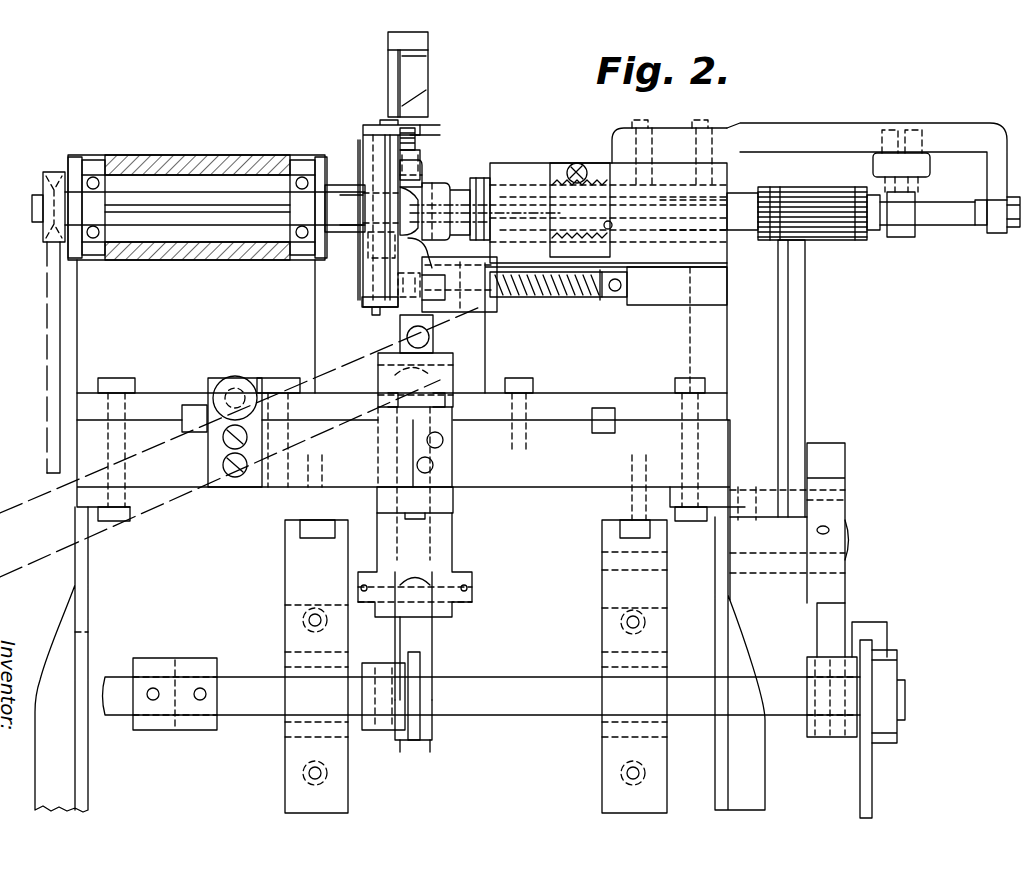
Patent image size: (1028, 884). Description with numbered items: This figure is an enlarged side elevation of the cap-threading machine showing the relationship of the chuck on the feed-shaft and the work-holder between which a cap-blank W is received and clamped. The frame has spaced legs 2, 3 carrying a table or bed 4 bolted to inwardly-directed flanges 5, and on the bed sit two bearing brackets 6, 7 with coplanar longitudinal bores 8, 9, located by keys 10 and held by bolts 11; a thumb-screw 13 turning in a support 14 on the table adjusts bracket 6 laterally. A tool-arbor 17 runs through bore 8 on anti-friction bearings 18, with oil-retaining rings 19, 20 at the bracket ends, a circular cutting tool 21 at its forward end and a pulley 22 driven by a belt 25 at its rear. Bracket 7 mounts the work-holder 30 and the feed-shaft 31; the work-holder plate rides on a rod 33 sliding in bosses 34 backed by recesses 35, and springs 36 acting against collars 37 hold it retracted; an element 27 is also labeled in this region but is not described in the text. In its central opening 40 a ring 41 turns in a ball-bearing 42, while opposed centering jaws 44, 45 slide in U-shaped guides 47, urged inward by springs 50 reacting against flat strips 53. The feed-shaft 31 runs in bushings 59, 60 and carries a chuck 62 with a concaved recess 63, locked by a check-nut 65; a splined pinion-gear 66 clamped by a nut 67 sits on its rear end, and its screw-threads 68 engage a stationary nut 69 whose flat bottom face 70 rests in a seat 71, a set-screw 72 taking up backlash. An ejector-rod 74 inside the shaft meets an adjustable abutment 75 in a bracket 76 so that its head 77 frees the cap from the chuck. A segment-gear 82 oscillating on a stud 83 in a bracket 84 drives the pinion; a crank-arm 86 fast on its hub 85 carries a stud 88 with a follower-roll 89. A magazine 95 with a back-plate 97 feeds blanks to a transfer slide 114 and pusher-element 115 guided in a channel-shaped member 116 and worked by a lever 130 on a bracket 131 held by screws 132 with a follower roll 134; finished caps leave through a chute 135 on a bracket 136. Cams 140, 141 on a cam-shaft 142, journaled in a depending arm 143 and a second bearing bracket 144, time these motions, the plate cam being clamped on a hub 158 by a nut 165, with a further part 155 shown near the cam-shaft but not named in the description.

The leg 2 is at (88, 604).
The leg 3 is at (713, 629).
The table or bed 4 is at (540, 474).
The inwardly-directed flanges 5 is at (140, 500).
The bearing bracket 6 is at (196, 326).
The bearing bracket 7 is at (724, 347).
The longitudinal bore 8 is at (219, 156).
The longitudinal bore 9 is at (670, 180).
The keys 10 is at (182, 430).
The bolts 11 is at (120, 378).
The thumb-screw 13 is at (238, 388).
The support 14 is at (208, 386).
The tool-arbor 17 is at (215, 208).
The anti-friction bearings 18 is at (110, 160).
The oil-retaining ring 19 is at (322, 156).
The oil-retaining ring 20 is at (73, 158).
The circular cutting tool 21 is at (352, 230).
The pulley 22 is at (42, 177).
The belt 25 is at (46, 333).
The collar 27 is at (439, 294).
The work-holder 30 is at (367, 134).
The feed-shaft 31 is at (740, 192).
The rod 33 is at (532, 298).
The bosses 34 is at (457, 314).
The recesses 35 is at (723, 308).
The springs 36 is at (555, 300).
The collars 37 is at (610, 298).
The central opening 40 is at (364, 268).
The ring 41 is at (364, 187).
The ball-bearing 42 is at (365, 152).
The centering jaw 44 is at (442, 180).
The centering jaw 45 is at (438, 276).
The U-shaped guides 47 is at (437, 166).
The springs 50 is at (420, 147).
The flat strips 53 is at (422, 128).
The bushing 59 is at (685, 244).
The bushing 60 is at (526, 177).
The chuck 62 is at (460, 190).
The concaved recess 63 is at (440, 239).
The check-nut 65 is at (492, 168).
The splined pinion-gear 66 is at (815, 186).
The nut 67 is at (874, 232).
The screw-threads 68 is at (629, 238).
The stationary nut 69 is at (552, 248).
The flat bottom face 70 is at (620, 286).
The seat 71 is at (606, 226).
The set-screw 72 is at (577, 163).
The ejector-rod 74 is at (935, 226).
The adjustable abutment 75 is at (980, 227).
The bracket 76 is at (960, 132).
The head 77 is at (459, 186).
The segment-gear 82 is at (808, 320).
The stud 83 is at (790, 569).
The bracket 84 is at (662, 580).
The hub 85 is at (840, 499).
The crank-arm 86 is at (846, 589).
The stud 88 is at (812, 685).
The follower-roll 89 is at (870, 624).
The magazine 95 is at (386, 48).
The back-plate 97 is at (396, 74).
The cap-blank W is at (416, 58).
The transfer slide 114 is at (378, 371).
The pusher-element 115 is at (396, 331).
The channel-shaped member 116 is at (378, 396).
The lever 130 is at (434, 632).
The bracket 131 is at (450, 540).
The screws 132 is at (448, 504).
The follower roll 134 is at (417, 752).
The chute 135 is at (183, 504).
The bracket 136 is at (454, 470).
The cam 140 is at (418, 661).
The cam 141 is at (860, 791).
The cam-shaft 142 is at (545, 687).
The depending arm 143 is at (602, 627).
The second bearing bracket 144 is at (292, 581).
The collar 155 is at (380, 730).
The hub 158 is at (842, 740).
The nut 165 is at (882, 740).